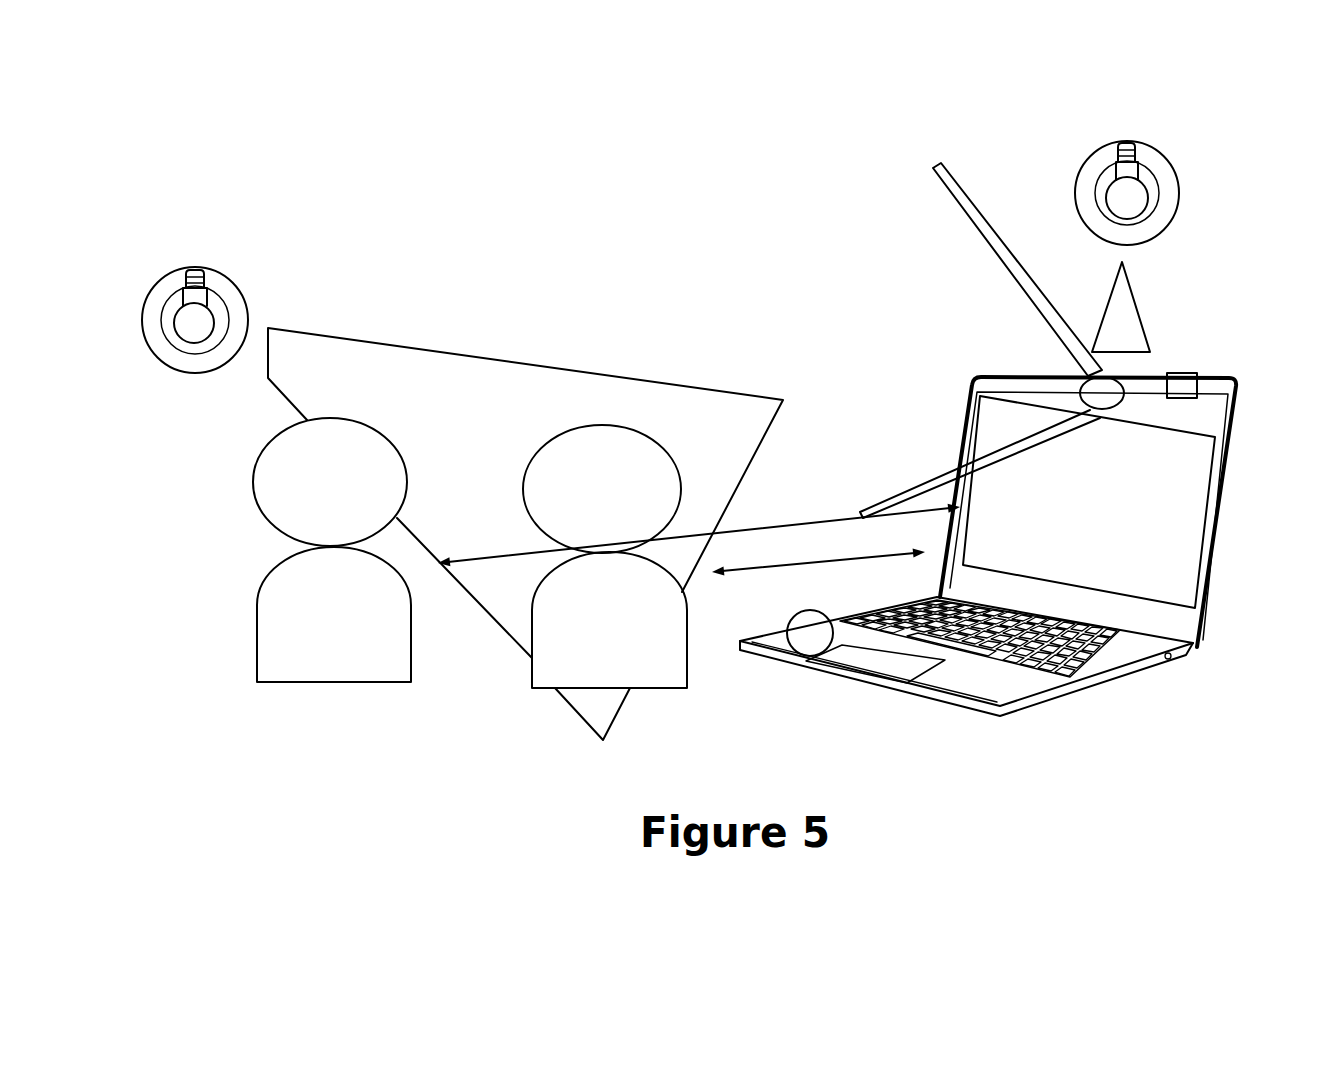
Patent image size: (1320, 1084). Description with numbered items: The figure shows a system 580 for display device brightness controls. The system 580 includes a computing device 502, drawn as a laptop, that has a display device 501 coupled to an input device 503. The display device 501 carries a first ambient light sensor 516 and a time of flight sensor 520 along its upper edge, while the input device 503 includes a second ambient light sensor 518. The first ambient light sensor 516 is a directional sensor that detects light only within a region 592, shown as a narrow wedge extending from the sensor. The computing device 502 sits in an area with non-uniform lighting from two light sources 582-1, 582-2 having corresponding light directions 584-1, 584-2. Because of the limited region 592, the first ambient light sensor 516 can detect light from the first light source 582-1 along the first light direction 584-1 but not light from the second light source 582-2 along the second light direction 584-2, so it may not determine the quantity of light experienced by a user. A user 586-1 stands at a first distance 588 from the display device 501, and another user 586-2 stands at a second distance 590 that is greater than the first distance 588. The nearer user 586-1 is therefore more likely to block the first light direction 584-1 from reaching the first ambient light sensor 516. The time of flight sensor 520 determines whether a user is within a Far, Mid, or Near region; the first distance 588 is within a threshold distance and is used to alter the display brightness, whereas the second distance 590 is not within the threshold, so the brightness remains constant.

The display device 501 is at (1102, 512).
The computing device 502 is at (998, 530).
The input device 503 is at (998, 694).
The first ambient light sensor 516 is at (1088, 378).
The second ambient light sensor 518 is at (797, 658).
The time of flight sensor 520 is at (1183, 373).
The system 580 is at (550, 220).
The first light source 582-1 is at (222, 276).
The second light source 582-2 is at (1183, 186).
The first light direction 584-1 is at (367, 327).
The second light direction 584-2 is at (1122, 296).
The user 586-1 is at (532, 689).
The user 586-2 is at (257, 684).
The first distance 588 is at (815, 563).
The second distance 590 is at (477, 557).
The region 592 is at (930, 285).